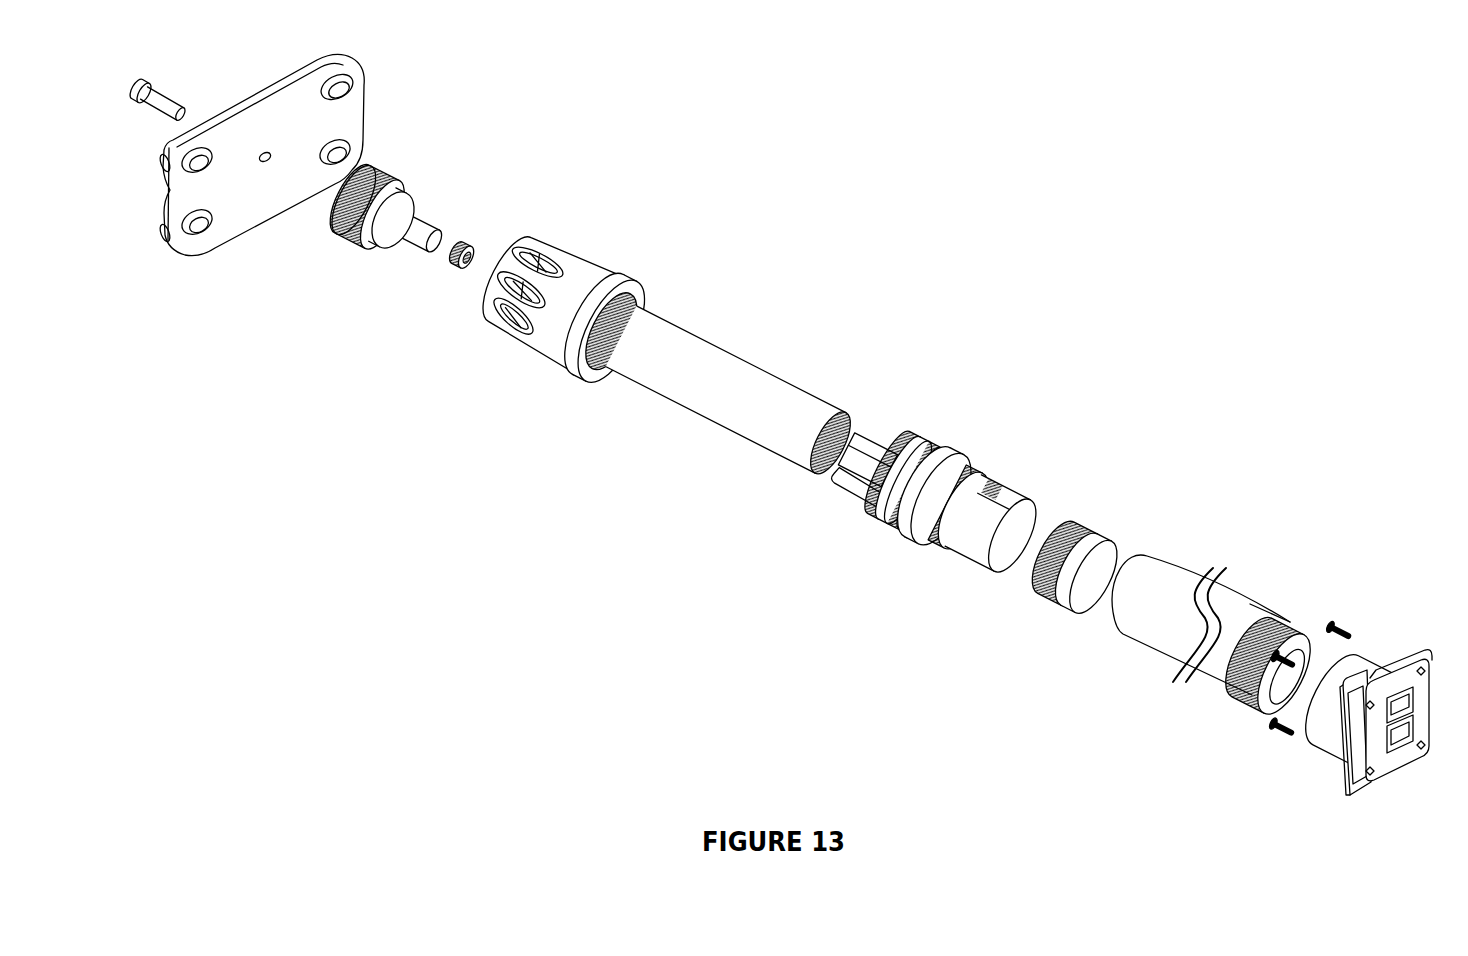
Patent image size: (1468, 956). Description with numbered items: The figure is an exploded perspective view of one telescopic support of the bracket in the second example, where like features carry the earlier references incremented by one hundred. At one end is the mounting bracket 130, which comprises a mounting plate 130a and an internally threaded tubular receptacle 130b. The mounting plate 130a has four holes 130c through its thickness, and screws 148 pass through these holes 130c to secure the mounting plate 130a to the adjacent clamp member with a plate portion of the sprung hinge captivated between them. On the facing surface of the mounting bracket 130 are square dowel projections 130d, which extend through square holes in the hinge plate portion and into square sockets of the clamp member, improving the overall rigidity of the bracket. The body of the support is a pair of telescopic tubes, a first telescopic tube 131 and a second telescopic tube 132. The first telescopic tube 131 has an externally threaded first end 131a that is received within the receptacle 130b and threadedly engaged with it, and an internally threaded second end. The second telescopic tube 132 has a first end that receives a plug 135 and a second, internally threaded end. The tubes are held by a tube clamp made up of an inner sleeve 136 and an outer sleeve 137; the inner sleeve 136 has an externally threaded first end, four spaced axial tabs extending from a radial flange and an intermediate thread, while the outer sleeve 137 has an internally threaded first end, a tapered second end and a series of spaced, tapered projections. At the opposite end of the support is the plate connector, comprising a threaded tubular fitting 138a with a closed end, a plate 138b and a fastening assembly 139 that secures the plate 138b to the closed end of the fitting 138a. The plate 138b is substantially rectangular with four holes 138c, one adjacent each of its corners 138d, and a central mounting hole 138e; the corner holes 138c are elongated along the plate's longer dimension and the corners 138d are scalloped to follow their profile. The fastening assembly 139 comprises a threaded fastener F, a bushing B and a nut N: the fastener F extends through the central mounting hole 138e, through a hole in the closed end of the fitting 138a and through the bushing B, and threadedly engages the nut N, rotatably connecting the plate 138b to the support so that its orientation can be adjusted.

The mounting bracket 130 is at (1394, 598).
The mounting plate 130a is at (1357, 757).
The internally threaded tubular receptacle 130b is at (1368, 660).
The holes 130c is at (1432, 752).
The square dowel projections 130d is at (1407, 737).
The first telescopic tube 131 is at (1178, 621).
The externally threaded first end 131a is at (1245, 697).
The second telescopic tube 132 is at (738, 400).
The plug 135 is at (1093, 510).
The inner sleeve 136 is at (979, 423).
The outer sleeve 137 is at (584, 240).
The threaded tubular fitting 138a is at (382, 184).
The plate 138b is at (326, 140).
The holes 138c is at (347, 153).
The corners 138d is at (338, 58).
The central mounting hole 138e is at (273, 153).
The fastening assembly 139 is at (420, 360).
The threaded fastener F is at (160, 110).
The bushing B is at (417, 243).
The nut N is at (457, 265).
The screws 148 is at (1278, 665).